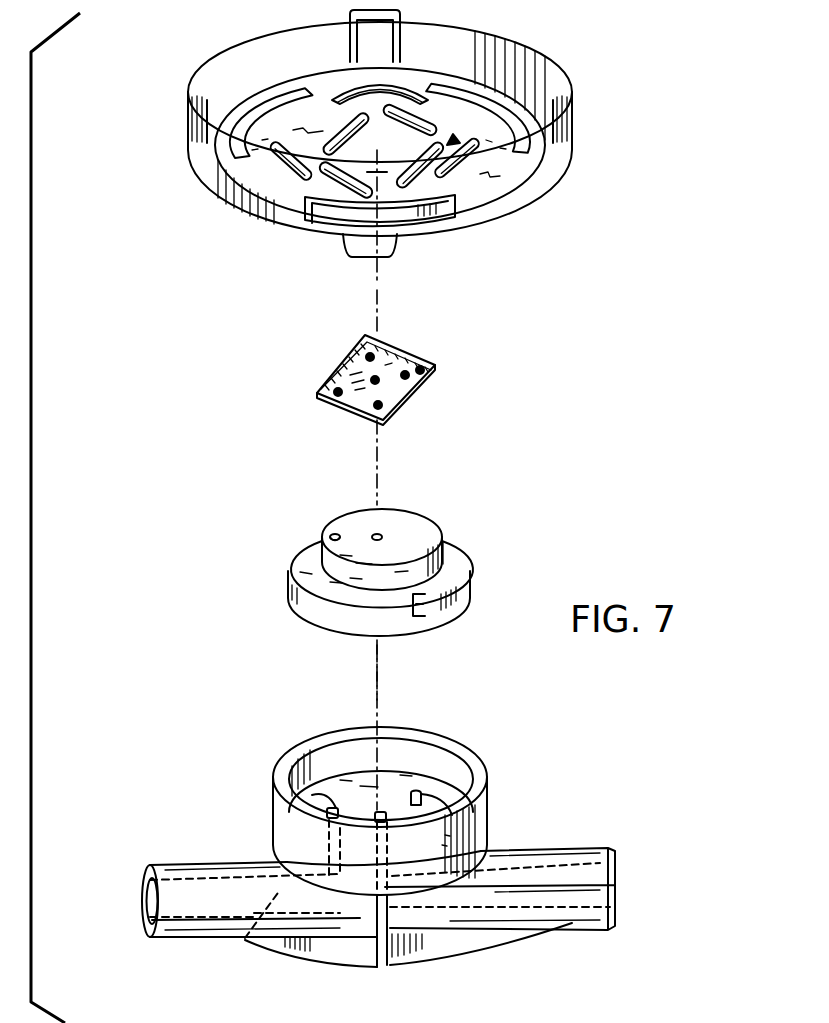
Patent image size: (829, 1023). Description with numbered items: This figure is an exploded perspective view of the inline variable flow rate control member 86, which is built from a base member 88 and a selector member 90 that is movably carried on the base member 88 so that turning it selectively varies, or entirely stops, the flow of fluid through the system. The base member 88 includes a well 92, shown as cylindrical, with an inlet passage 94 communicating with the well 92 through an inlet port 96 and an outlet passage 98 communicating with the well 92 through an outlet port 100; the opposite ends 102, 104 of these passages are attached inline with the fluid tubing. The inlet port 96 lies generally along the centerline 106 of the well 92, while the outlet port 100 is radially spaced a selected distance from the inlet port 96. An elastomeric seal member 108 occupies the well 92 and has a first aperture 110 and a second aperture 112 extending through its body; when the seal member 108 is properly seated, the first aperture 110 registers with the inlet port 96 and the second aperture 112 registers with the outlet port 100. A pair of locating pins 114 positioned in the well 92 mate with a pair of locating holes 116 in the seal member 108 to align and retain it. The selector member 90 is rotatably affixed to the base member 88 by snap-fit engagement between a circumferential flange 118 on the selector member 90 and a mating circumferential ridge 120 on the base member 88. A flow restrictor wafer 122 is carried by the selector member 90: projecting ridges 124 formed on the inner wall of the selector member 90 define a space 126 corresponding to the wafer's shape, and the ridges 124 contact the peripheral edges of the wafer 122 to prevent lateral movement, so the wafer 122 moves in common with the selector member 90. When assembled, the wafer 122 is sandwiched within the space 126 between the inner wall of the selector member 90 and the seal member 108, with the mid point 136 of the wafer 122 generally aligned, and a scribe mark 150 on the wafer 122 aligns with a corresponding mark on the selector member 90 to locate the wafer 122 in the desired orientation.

The inline variable flow rate control member 86 is at (556, 516).
The base member 88 is at (365, 868).
The selector member 90 is at (508, 108).
The well 92 is at (376, 787).
The inlet passage 94 is at (575, 897).
The inlet port 96 is at (380, 812).
The outlet passage 98 is at (245, 938).
The outlet port 100 is at (275, 796).
The opposite end of inlet passage 102 is at (612, 900).
The opposite end of outlet passage 104 is at (145, 900).
The centerline 106 is at (375, 658).
The elastomeric seal member 108 is at (374, 551).
The first aperture 110 is at (377, 537).
The second aperture 112 is at (332, 532).
The locating pins 114 is at (470, 785).
The locating holes 116 is at (480, 580).
The circumferential flange 118 is at (222, 95).
The circumferential ridge 120 is at (480, 833).
The flow restrictor wafer 122 is at (382, 363).
The projecting ridges 124 is at (300, 203).
The space 126 is at (262, 153).
The mid point 136 is at (353, 360).
The scribe mark 150 is at (422, 370).